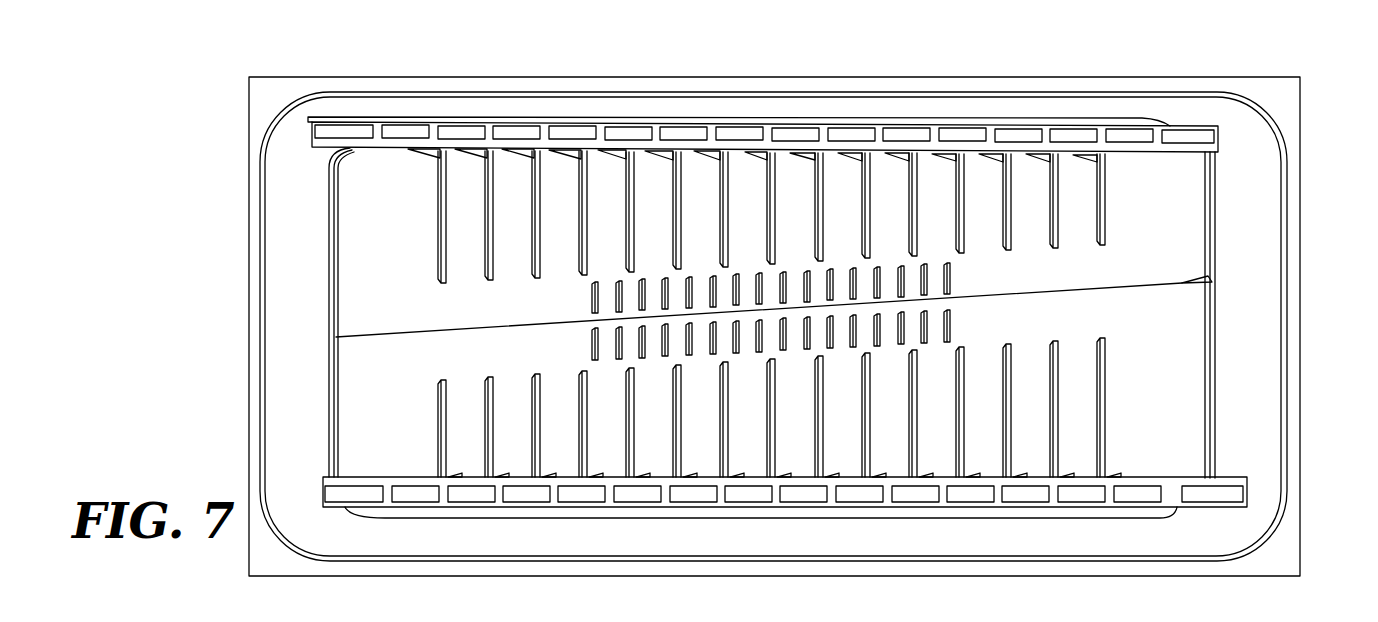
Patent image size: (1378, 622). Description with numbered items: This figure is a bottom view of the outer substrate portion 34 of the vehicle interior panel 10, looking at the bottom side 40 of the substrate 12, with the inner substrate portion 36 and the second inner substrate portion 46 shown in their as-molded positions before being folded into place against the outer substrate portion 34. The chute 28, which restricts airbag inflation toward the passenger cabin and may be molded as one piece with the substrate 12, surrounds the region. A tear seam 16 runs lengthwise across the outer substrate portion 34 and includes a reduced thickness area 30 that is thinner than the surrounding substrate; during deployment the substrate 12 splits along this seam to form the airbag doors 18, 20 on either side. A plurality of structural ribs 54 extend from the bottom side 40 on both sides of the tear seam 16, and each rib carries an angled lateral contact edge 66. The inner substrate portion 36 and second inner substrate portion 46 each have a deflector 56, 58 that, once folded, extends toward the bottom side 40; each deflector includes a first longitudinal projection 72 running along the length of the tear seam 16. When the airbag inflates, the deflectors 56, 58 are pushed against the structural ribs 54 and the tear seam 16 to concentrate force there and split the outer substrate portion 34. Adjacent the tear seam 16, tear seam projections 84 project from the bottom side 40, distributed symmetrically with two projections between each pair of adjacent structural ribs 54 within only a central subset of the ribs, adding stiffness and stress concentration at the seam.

The vehicle interior panel 10 is at (1110, 41).
The substrate 12 is at (1020, 86).
The chute 28 is at (1190, 93).
The airbag door 18 is at (407, 175).
The airbag door 20 is at (410, 455).
The second inner substrate portion 46 is at (668, 125).
The deflector 58 is at (882, 130).
The bottom side 40 is at (1163, 228).
The tear seam projections 84 is at (737, 293).
The tear seam 16 is at (1182, 283).
The reduced thickness area 30 is at (1182, 283).
The outer substrate portion 34 is at (1192, 358).
The angled lateral contact edge 66 is at (1053, 343).
The structural ribs 54 is at (1057, 413).
The first longitudinal projection 72 is at (720, 495).
The inner substrate portion 36 is at (610, 497).
The deflector 56 is at (828, 500).